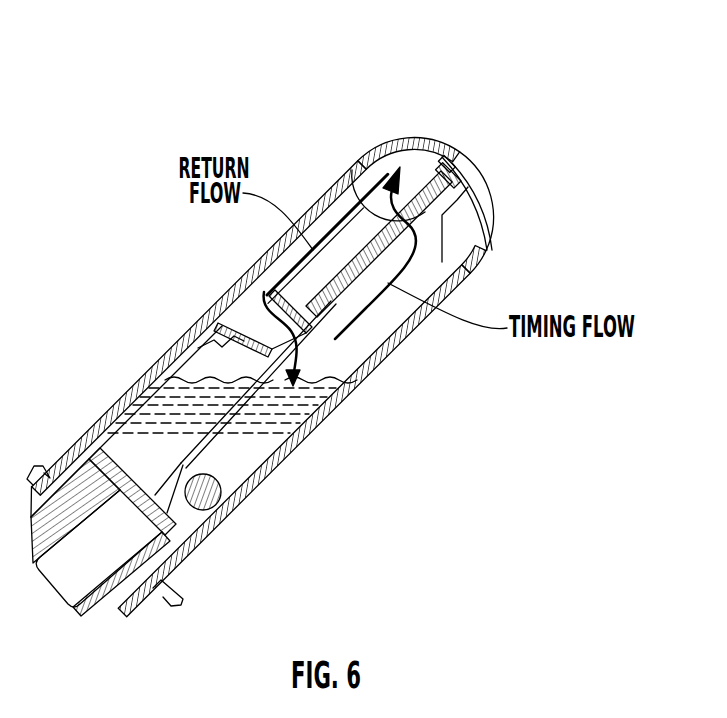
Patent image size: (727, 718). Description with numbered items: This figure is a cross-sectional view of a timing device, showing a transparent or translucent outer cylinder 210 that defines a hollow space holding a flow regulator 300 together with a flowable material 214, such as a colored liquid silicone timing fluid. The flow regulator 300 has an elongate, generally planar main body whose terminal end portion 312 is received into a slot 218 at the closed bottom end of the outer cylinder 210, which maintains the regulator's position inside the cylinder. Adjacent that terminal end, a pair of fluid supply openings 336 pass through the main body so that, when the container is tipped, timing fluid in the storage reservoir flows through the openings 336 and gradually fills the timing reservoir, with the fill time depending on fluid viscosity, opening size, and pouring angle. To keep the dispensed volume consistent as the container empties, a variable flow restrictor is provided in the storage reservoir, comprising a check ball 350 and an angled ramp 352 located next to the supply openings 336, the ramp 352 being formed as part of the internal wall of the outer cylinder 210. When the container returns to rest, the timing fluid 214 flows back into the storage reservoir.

The outer cylinder 210 is at (378, 366).
The flowable material 214 is at (262, 432).
The slot 218 is at (428, 167).
The flow regulator 300 is at (165, 385).
The terminal end portion 312 is at (451, 168).
The fluid supply openings 336 is at (352, 168).
The check ball 350 is at (224, 488).
The angled ramp 352 is at (461, 232).